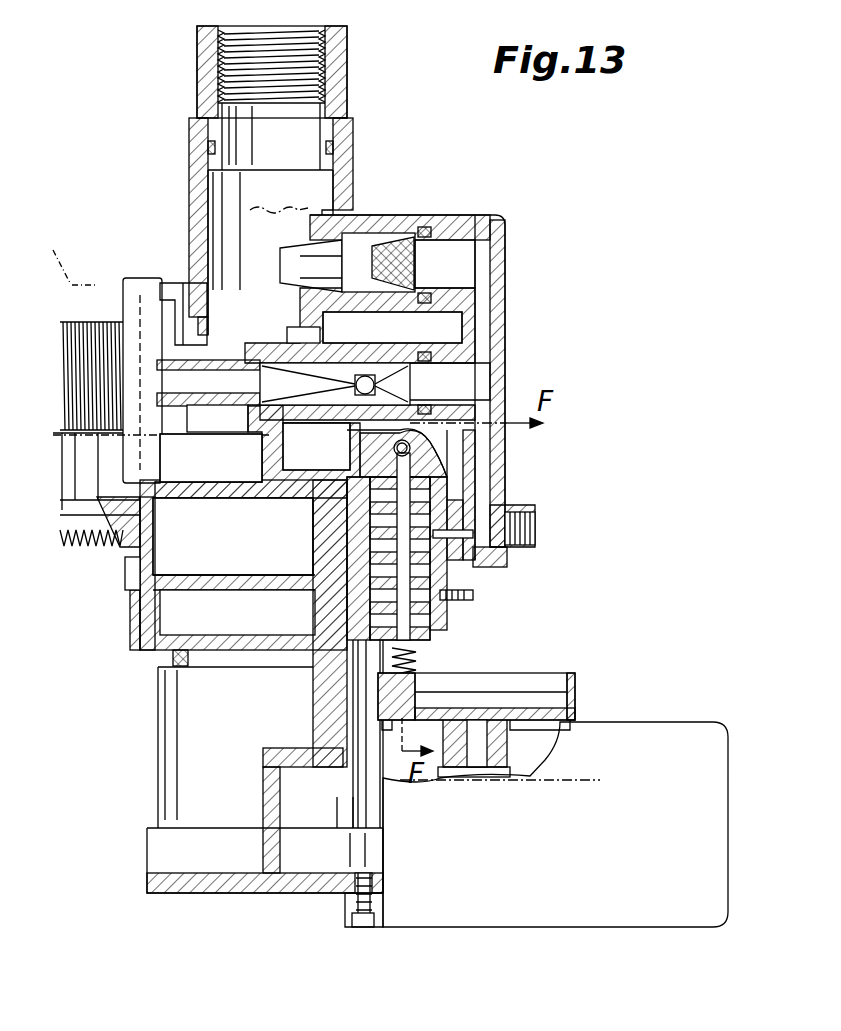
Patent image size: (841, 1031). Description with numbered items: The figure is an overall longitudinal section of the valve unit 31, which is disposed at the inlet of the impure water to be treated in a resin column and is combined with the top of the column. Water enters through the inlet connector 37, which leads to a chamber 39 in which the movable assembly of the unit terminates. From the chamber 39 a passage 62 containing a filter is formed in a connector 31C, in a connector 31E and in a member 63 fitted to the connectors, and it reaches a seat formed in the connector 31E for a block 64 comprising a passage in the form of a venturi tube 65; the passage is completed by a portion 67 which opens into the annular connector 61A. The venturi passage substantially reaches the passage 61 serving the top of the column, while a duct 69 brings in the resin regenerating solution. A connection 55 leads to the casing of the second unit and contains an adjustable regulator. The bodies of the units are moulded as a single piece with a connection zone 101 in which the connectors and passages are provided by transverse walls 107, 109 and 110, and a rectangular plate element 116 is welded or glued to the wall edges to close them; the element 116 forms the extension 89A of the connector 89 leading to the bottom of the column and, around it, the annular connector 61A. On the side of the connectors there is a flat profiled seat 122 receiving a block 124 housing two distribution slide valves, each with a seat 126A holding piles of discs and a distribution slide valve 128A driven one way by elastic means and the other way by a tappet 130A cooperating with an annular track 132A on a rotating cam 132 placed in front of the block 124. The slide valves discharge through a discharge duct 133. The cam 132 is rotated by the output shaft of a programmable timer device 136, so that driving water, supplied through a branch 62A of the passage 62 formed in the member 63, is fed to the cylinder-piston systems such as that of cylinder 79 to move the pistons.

The inlet connector 37 is at (197, 68).
The valve unit 31 is at (192, 155).
The chamber 39 is at (245, 243).
The portion 67 is at (205, 275).
The passage 61 is at (215, 332).
The annular connector 61A is at (123, 580).
The connector 31C is at (385, 222).
The member 63 is at (500, 226).
The block 64 is at (310, 357).
The venturi tube 65 is at (392, 327).
The connector 31E is at (392, 327).
The passage 62 is at (480, 318).
The duct 69 is at (316, 446).
The discharge duct 133 is at (398, 450).
The connector 89 is at (236, 465).
The extension 89A is at (210, 458).
The transverse wall 107 is at (195, 498).
The seat 126A is at (320, 498).
The transverse wall 109 is at (222, 578).
The connection 55 is at (244, 618).
The rectangular plate element 116 is at (142, 617).
The transverse wall 110 is at (195, 650).
The connection zone 101 is at (318, 680).
The cylinder-piston system 79 is at (160, 755).
The flat profiled seat 122 is at (350, 783).
The block 124 is at (420, 468).
The branch 62A is at (483, 460).
The distribution slide valve 128A is at (470, 584).
The tappet 130A is at (420, 672).
The rotating cam 132 is at (525, 672).
The annular track 132A is at (575, 697).
The timer device 136 is at (435, 900).